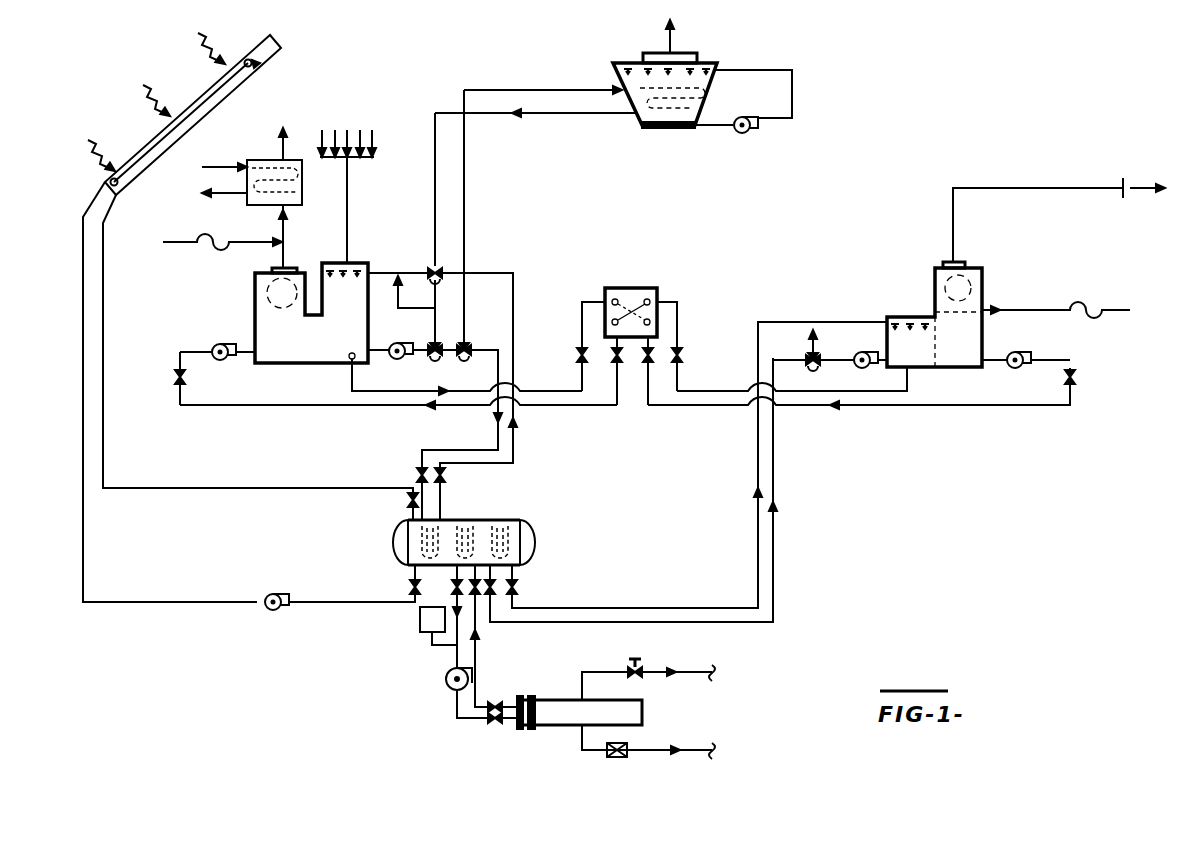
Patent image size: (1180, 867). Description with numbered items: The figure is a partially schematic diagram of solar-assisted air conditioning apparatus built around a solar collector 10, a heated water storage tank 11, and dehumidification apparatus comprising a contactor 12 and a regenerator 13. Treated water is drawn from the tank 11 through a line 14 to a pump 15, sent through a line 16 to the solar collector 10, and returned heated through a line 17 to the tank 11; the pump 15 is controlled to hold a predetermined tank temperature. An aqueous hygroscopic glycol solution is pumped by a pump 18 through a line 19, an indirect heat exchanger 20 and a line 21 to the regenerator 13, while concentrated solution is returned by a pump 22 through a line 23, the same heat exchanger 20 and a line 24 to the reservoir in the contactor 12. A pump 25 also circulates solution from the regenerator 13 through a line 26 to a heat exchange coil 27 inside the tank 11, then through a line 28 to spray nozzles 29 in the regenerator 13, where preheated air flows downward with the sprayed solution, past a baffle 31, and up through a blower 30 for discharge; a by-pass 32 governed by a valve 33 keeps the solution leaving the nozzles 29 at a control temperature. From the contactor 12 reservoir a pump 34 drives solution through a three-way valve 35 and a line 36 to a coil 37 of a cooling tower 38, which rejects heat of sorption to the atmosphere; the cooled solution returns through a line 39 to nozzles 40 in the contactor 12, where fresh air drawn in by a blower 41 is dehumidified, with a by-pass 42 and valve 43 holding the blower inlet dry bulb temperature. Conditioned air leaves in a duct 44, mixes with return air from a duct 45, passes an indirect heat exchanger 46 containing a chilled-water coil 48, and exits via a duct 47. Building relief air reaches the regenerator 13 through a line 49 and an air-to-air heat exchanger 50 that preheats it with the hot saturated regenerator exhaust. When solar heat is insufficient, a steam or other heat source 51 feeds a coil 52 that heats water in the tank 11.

The solar collector 10 is at (148, 132).
The heated water storage tank 11 is at (523, 523).
The contactor 12 is at (253, 306).
The regenerator 13 is at (986, 286).
The line 14 is at (318, 607).
The pump 15 is at (267, 594).
The line 16 is at (148, 607).
The line 17 is at (214, 490).
The pump 18 is at (216, 370).
The line 19 is at (268, 412).
The indirect heat exchanger 20 is at (628, 282).
The line 21 is at (680, 306).
The pump 22 is at (1025, 351).
The line 23 is at (990, 408).
The line 24 is at (350, 391).
The pump 25 is at (866, 350).
The line 26 is at (777, 547).
The heat exchange coil 27 is at (503, 520).
The line 28 is at (704, 620).
The spray nozzles 29 is at (910, 339).
The blower 30 is at (967, 268).
The baffle 31 is at (938, 343).
The by-pass 32 is at (807, 346).
The valve 33 is at (820, 372).
The pump 34 is at (408, 343).
The three-way valve 35 is at (466, 360).
The line 36 is at (466, 182).
The coil 37 is at (718, 88).
The cooling tower 38 is at (612, 69).
The line 39 is at (433, 134).
The nozzles 40 is at (365, 268).
The blower 41 is at (290, 268).
The by-pass 42 is at (430, 308).
The valve 43 is at (430, 362).
The duct 44 is at (272, 266).
The duct 45 is at (244, 240).
The indirect heat exchanger 46 is at (302, 200).
The duct 47 is at (281, 151).
The indirect heat exchange coil 48 is at (302, 178).
The line 49 is at (1005, 313).
The indirect air-to-air heat exchanger 50 is at (985, 324).
The heat source 51 is at (645, 712).
The coil 52 is at (480, 508).